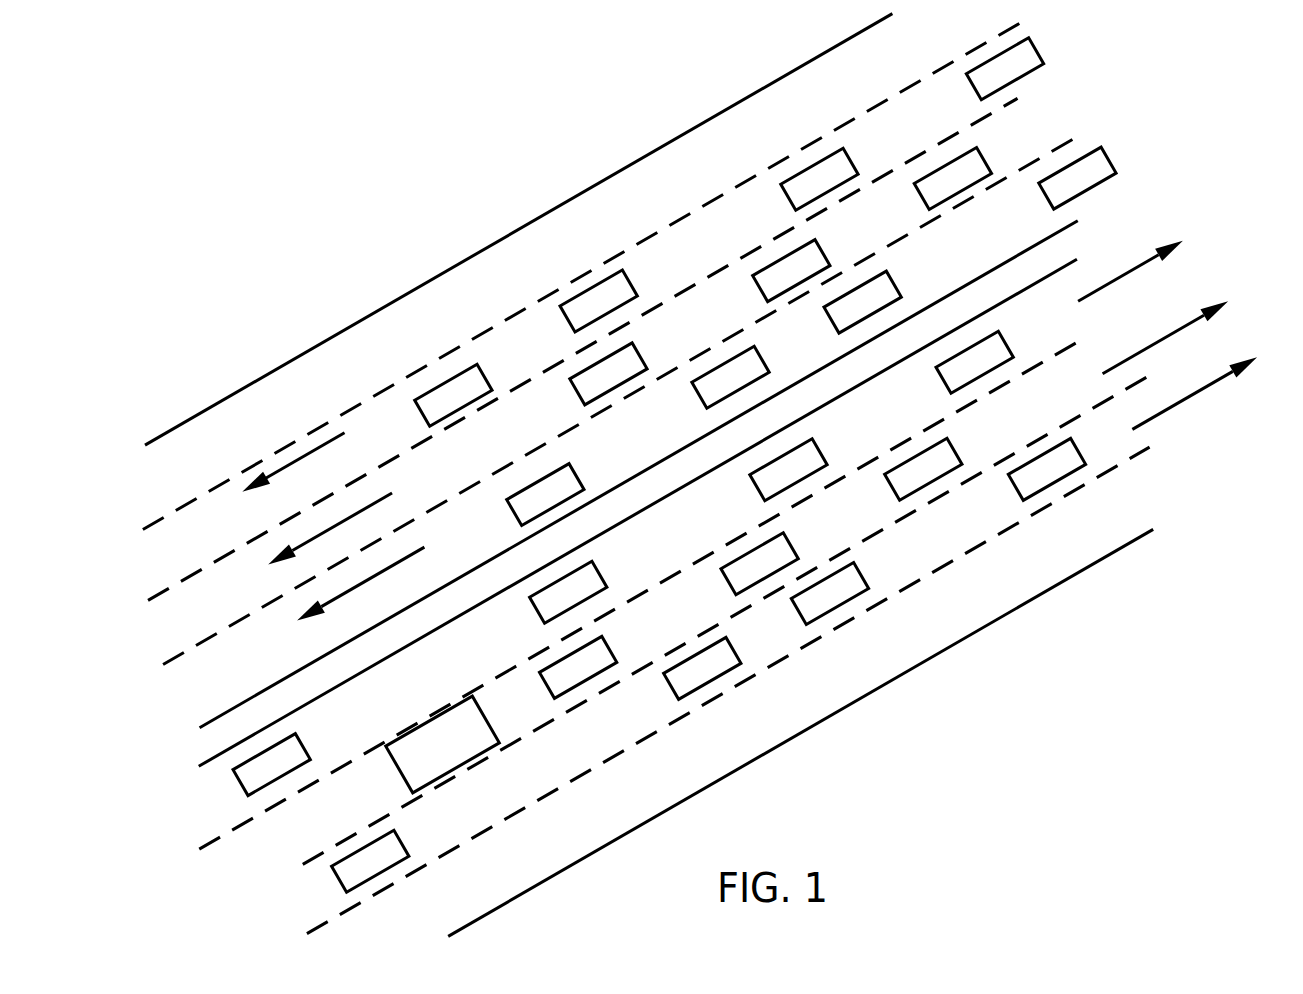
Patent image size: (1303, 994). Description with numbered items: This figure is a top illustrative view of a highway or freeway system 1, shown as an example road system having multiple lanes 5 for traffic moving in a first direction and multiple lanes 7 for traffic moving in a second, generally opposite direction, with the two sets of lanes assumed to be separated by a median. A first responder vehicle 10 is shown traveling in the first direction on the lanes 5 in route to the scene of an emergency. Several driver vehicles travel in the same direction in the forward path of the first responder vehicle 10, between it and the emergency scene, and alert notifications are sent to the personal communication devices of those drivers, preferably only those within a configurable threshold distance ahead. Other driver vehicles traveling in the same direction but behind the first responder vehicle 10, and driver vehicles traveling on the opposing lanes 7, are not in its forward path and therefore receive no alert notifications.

The highway or freeway system 1 is at (240, 215).
The lanes 5 is at (865, 696).
The lanes 7 is at (347, 329).
The first responder vehicle 10 is at (443, 744).